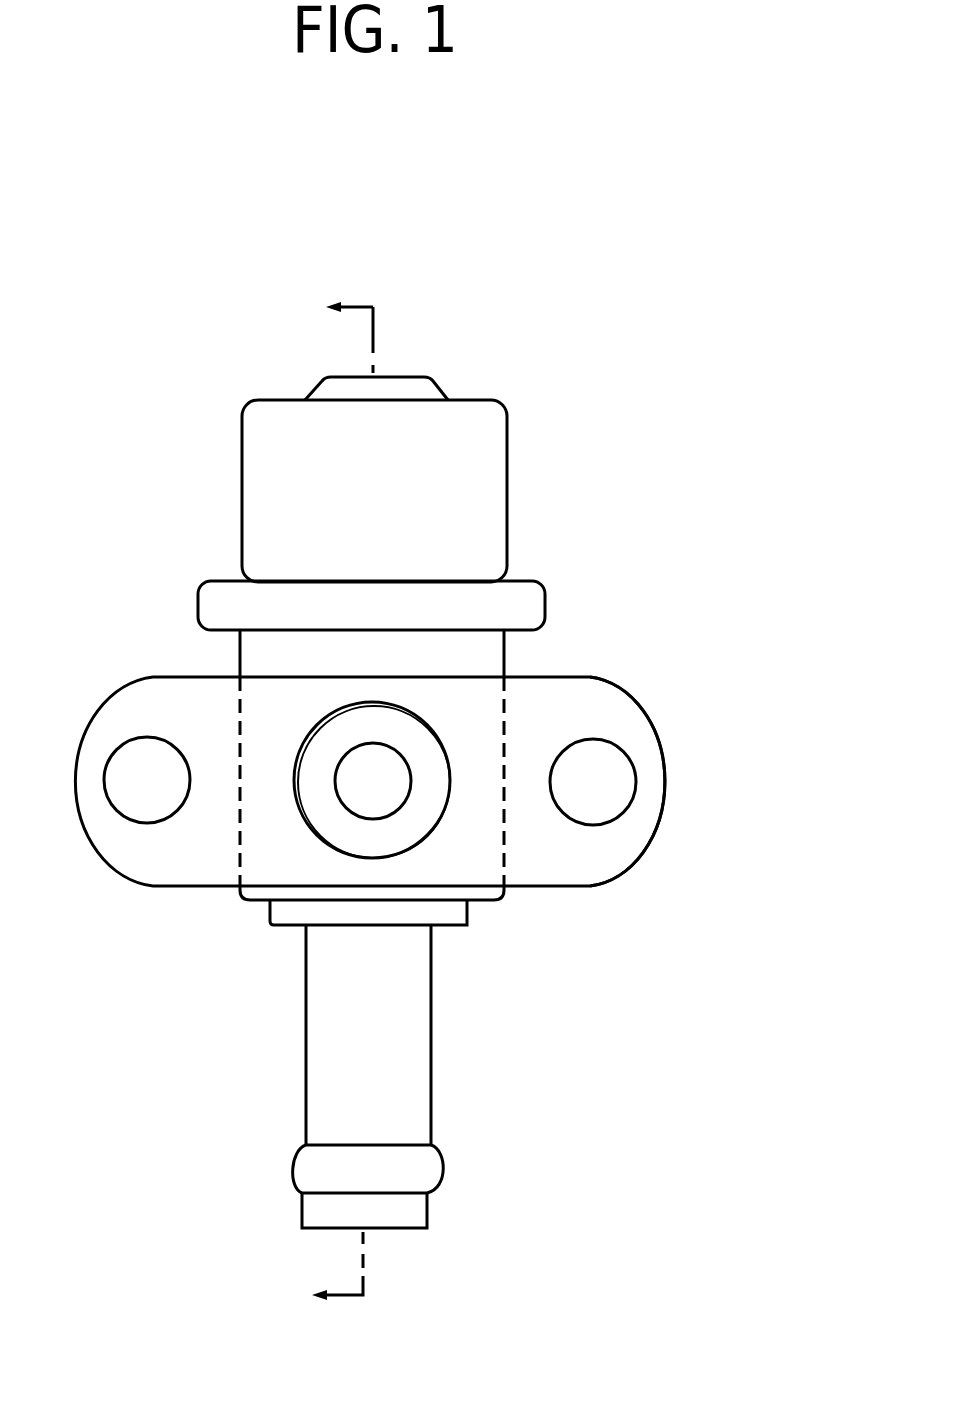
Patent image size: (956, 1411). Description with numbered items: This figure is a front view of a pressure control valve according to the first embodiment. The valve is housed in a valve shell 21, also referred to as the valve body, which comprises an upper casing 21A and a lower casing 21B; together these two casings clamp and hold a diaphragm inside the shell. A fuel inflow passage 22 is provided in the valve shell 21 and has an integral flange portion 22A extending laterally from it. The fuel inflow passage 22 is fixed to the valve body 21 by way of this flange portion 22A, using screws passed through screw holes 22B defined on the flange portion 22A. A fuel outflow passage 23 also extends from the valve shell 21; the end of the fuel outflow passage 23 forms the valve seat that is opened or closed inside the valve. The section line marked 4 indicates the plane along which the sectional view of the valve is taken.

The section line IV-IV 4 is at (322, 800).
The valve shell 21 is at (509, 575).
The upper casing 21A is at (478, 472).
The lower casing 21B is at (485, 663).
The fuel inflow passage 22 is at (328, 822).
The flange portion 22A is at (583, 862).
The screw holes 22B is at (608, 767).
The fuel outflow passage 23 is at (423, 1070).